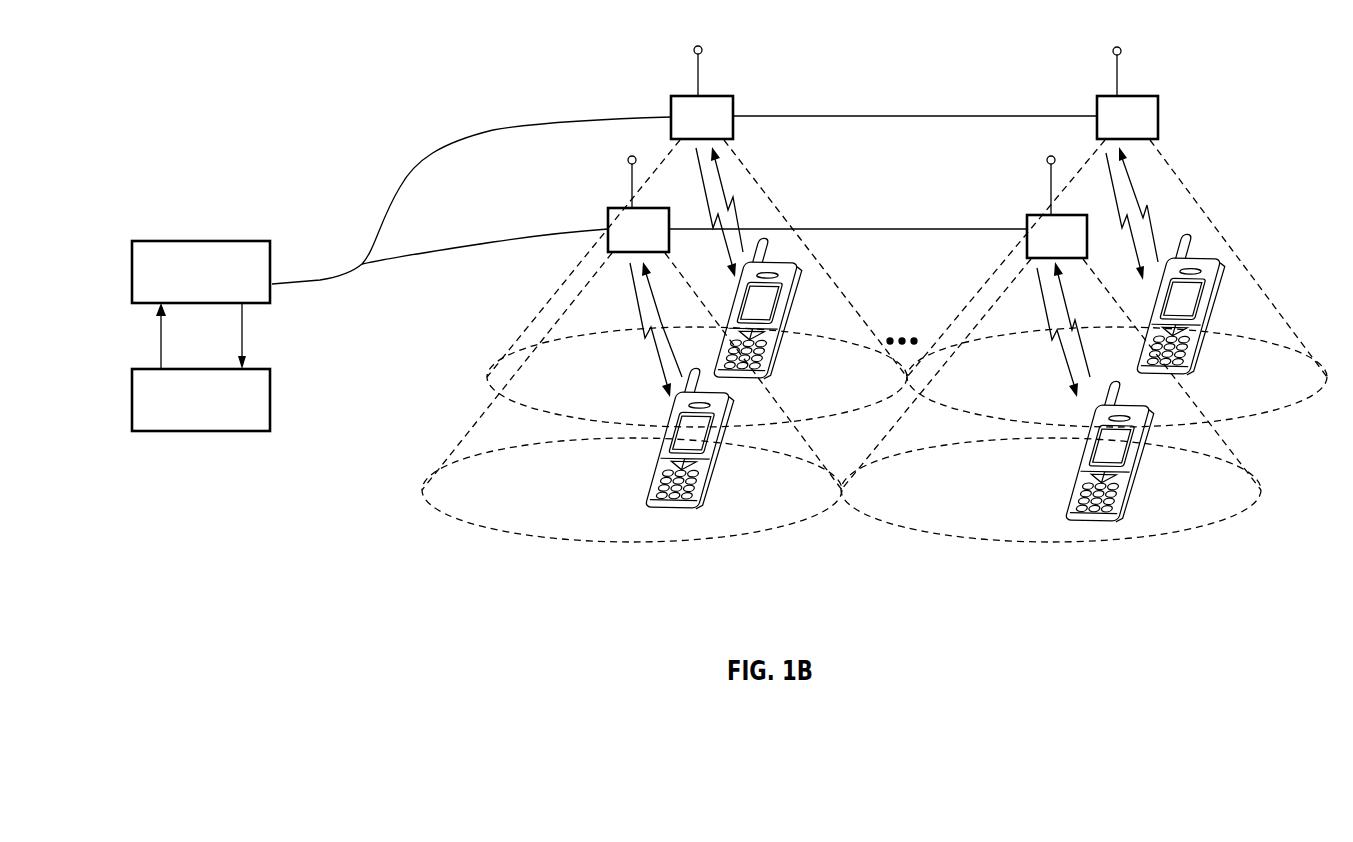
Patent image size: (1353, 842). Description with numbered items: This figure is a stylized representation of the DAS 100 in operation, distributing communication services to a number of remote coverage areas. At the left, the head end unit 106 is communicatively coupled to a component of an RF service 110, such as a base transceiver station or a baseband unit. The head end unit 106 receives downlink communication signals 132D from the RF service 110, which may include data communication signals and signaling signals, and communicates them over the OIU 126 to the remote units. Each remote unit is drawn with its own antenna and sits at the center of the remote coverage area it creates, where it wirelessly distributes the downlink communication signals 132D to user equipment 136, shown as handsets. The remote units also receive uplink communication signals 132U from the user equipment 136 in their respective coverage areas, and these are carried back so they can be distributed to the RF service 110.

The DAS 100 is at (858, 76).
The head end unit 106 is at (242, 287).
The RF service 110 is at (220, 414).
The OIU 126 is at (502, 132).
The downlink communication signals 132D is at (161, 345).
The uplink communication signals 132U is at (242, 320).
The user equipment 136 is at (800, 303).